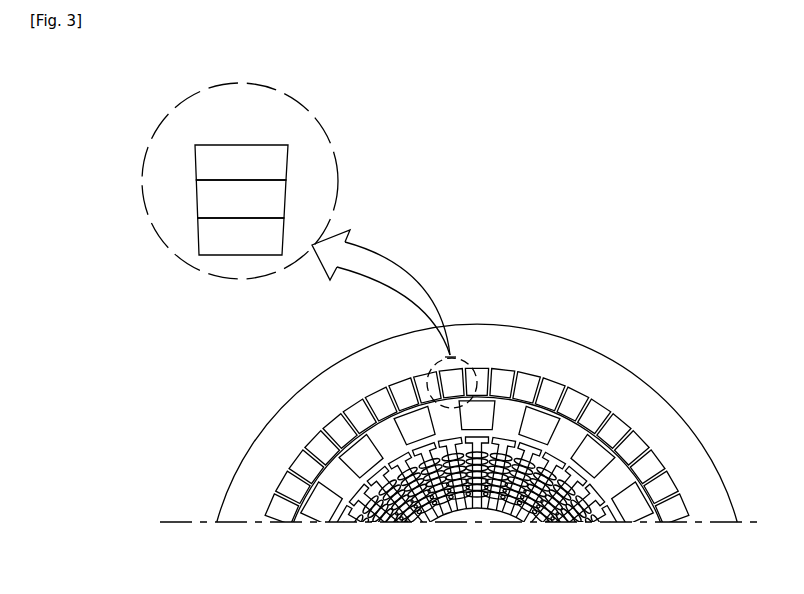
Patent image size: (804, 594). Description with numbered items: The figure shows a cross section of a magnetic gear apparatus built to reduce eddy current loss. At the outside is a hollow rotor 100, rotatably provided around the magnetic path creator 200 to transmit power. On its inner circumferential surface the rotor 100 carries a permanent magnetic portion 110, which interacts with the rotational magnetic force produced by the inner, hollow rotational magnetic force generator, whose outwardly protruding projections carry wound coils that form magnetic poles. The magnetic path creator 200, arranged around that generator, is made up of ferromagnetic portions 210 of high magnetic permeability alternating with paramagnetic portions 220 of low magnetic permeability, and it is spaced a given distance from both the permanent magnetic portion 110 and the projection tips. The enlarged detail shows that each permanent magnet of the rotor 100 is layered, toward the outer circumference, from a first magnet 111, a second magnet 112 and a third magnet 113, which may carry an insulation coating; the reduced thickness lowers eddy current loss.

The rotor 100 is at (420, 296).
The permanent magnetic portion 110 is at (528, 380).
The first magnet 111 is at (262, 149).
The second magnet 112 is at (278, 198).
The third magnet 113 is at (203, 240).
The magnetic path creator 200 is at (526, 422).
The ferromagnetic portions 210 is at (608, 458).
The paramagnetic portions 220 is at (577, 430).